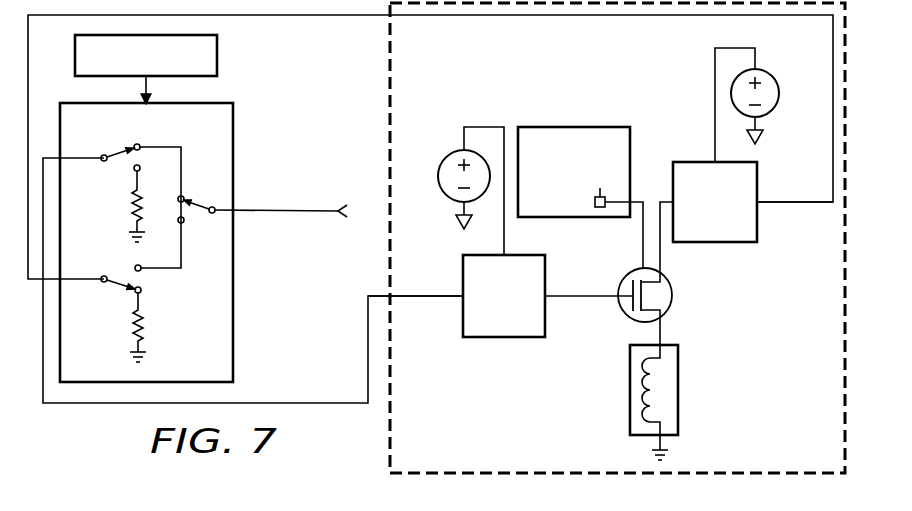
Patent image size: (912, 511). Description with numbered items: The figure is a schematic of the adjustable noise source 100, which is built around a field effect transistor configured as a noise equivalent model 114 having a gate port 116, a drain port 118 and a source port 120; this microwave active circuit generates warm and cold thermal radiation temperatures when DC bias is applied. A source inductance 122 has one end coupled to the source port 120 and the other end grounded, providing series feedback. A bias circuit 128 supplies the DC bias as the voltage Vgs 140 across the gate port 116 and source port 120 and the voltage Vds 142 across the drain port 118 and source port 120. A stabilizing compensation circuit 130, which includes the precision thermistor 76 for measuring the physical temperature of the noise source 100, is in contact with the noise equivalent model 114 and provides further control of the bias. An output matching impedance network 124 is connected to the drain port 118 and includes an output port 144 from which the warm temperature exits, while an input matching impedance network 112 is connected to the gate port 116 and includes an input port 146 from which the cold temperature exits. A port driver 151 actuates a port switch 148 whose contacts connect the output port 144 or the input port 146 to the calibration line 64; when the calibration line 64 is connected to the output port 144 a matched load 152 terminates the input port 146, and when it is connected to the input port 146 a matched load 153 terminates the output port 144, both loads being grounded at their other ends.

The port driver 151 is at (218, 54).
The port switch 148 is at (234, 314).
The matched load 152 is at (130, 202).
The matched load 153 is at (132, 320).
The calibration line 64 is at (318, 213).
The adjustable noise source 100 is at (378, 436).
The bias circuit 128 is at (446, 152).
The voltage Vgs 140 is at (445, 203).
The voltage Vds 142 is at (773, 117).
The stabilizing compensation circuit 130 is at (572, 127).
The precision thermistor 76 is at (593, 202).
The output matching impedance network 124 is at (693, 162).
The output port 144 is at (758, 205).
The input matching impedance network 112 is at (505, 338).
The input port 146 is at (462, 300).
The noise equivalent model 114 is at (690, 295).
The gate port 116 is at (615, 300).
The drain port 118 is at (663, 273).
The source port 120 is at (663, 316).
The source inductance 122 is at (633, 390).